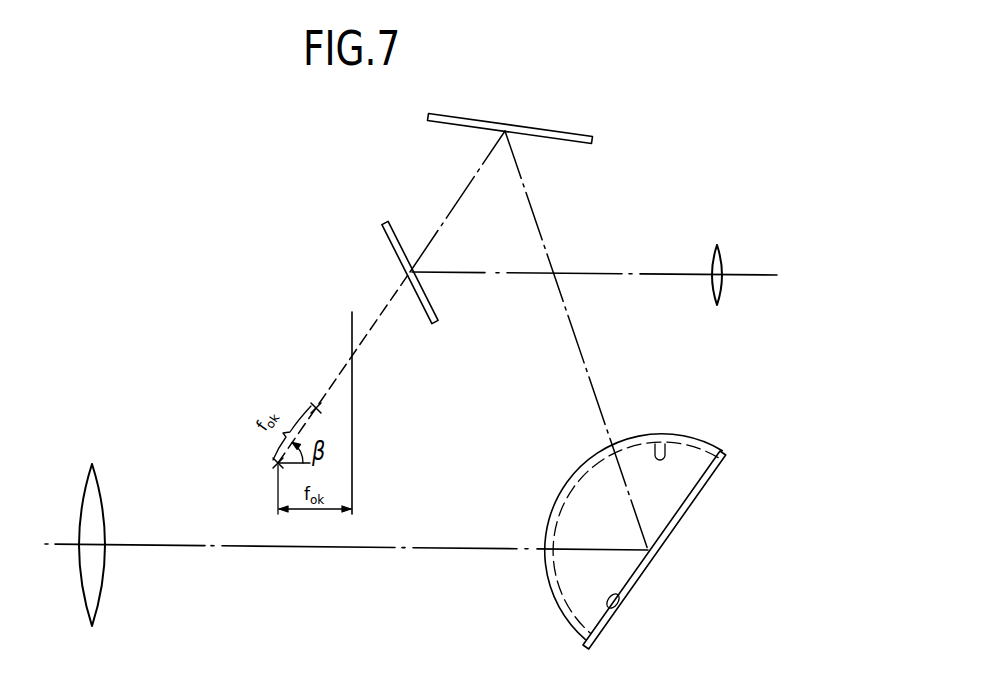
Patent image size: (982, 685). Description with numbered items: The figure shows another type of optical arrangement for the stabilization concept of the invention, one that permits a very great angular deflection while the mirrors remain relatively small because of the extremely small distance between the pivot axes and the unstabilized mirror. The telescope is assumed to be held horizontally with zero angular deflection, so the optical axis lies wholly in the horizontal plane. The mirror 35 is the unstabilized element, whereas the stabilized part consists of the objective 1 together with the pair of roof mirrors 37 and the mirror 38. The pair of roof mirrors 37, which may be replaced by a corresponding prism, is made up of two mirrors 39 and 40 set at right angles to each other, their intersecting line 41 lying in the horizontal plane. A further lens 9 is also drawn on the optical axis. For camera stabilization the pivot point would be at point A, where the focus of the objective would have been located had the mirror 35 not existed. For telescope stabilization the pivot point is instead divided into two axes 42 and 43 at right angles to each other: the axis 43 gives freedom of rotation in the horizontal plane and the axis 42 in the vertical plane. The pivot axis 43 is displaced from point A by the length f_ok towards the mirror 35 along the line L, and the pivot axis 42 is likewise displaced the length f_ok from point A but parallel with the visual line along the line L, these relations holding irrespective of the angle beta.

The objective 1 is at (82, 609).
The lens 9 is at (720, 253).
The mirror 35 is at (386, 248).
The pair of roof mirrors 37 is at (686, 528).
The mirror 38 is at (548, 122).
The mirror 39 is at (722, 407).
The mirror 40 is at (658, 443).
The intersecting line 41 is at (622, 601).
The axis 42 is at (353, 379).
The axis 43 is at (316, 405).